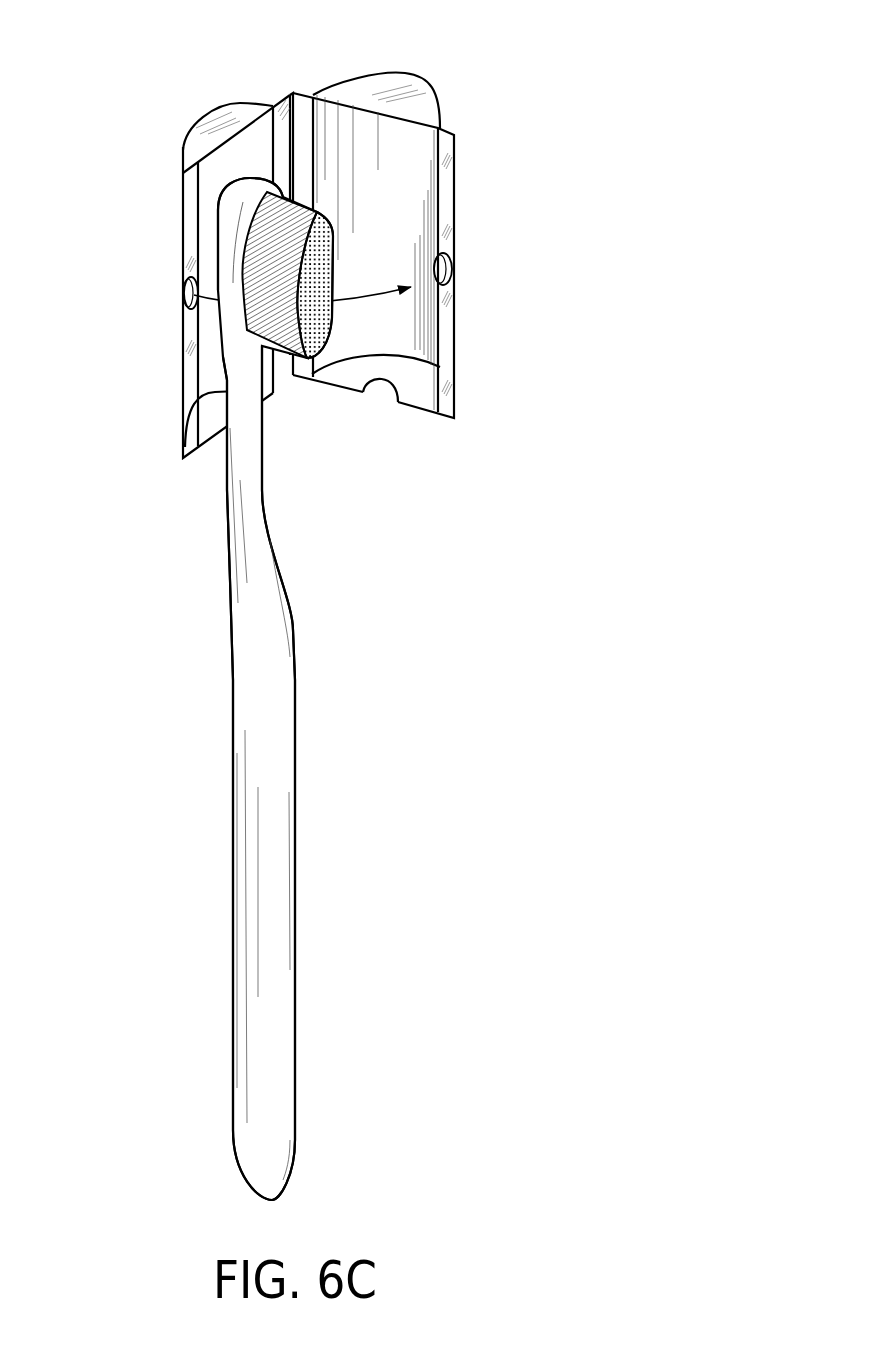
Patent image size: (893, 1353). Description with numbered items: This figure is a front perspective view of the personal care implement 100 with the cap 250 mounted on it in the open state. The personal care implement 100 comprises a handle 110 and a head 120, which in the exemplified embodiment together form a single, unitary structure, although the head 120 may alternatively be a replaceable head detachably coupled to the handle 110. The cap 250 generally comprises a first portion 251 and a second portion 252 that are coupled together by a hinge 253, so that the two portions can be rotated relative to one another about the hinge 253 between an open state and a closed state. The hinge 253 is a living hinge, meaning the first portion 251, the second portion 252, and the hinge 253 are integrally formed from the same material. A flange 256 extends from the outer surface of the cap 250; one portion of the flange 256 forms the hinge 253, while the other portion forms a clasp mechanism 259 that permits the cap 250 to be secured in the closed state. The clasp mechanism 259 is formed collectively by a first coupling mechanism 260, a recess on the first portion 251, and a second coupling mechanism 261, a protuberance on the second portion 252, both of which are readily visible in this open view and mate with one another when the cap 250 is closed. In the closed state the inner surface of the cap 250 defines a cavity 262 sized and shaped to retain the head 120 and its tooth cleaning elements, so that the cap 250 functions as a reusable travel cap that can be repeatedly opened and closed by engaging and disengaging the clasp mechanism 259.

The personal care implement 100 is at (233, 681).
The handle 110 is at (272, 1063).
The head 120 is at (233, 240).
The cap 250 is at (310, 279).
The first portion 251 is at (403, 312).
The second portion 252 is at (238, 165).
The hinge 253 is at (293, 152).
The flange 256 is at (386, 390).
The clasp mechanism 259 is at (450, 193).
The first coupling mechanism 260 is at (186, 307).
The second coupling mechanism 261 is at (453, 272).
The cavity 262 is at (369, 207).